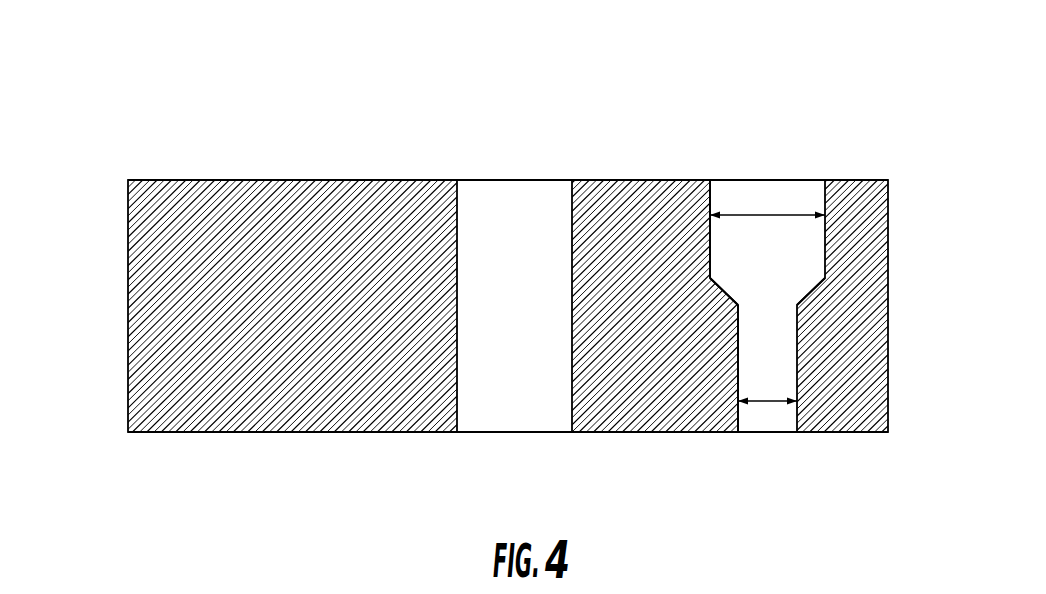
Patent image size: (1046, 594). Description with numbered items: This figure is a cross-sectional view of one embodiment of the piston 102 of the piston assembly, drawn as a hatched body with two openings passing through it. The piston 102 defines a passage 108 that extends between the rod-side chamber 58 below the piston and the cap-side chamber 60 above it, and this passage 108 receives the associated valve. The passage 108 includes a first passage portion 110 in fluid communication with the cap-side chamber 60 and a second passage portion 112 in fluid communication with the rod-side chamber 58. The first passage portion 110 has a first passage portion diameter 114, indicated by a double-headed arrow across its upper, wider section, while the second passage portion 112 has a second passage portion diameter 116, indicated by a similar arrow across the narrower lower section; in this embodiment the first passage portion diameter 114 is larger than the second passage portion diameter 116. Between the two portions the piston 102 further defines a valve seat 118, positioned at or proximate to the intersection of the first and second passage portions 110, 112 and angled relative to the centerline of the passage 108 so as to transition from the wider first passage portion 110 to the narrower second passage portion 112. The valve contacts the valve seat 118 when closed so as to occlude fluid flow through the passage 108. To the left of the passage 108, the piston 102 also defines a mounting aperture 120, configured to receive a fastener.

The piston 102 is at (161, 97).
The cap-side chamber 60 is at (433, 123).
The rod-side chamber 58 is at (528, 478).
The mounting aperture 120 is at (506, 220).
The passage 108 is at (793, 127).
The first passage portion 110 is at (733, 262).
The first passage portion diameter 114 is at (740, 215).
The valve seat 118 is at (735, 276).
The second passage portion 112 is at (763, 367).
The second passage portion diameter 116 is at (762, 401).